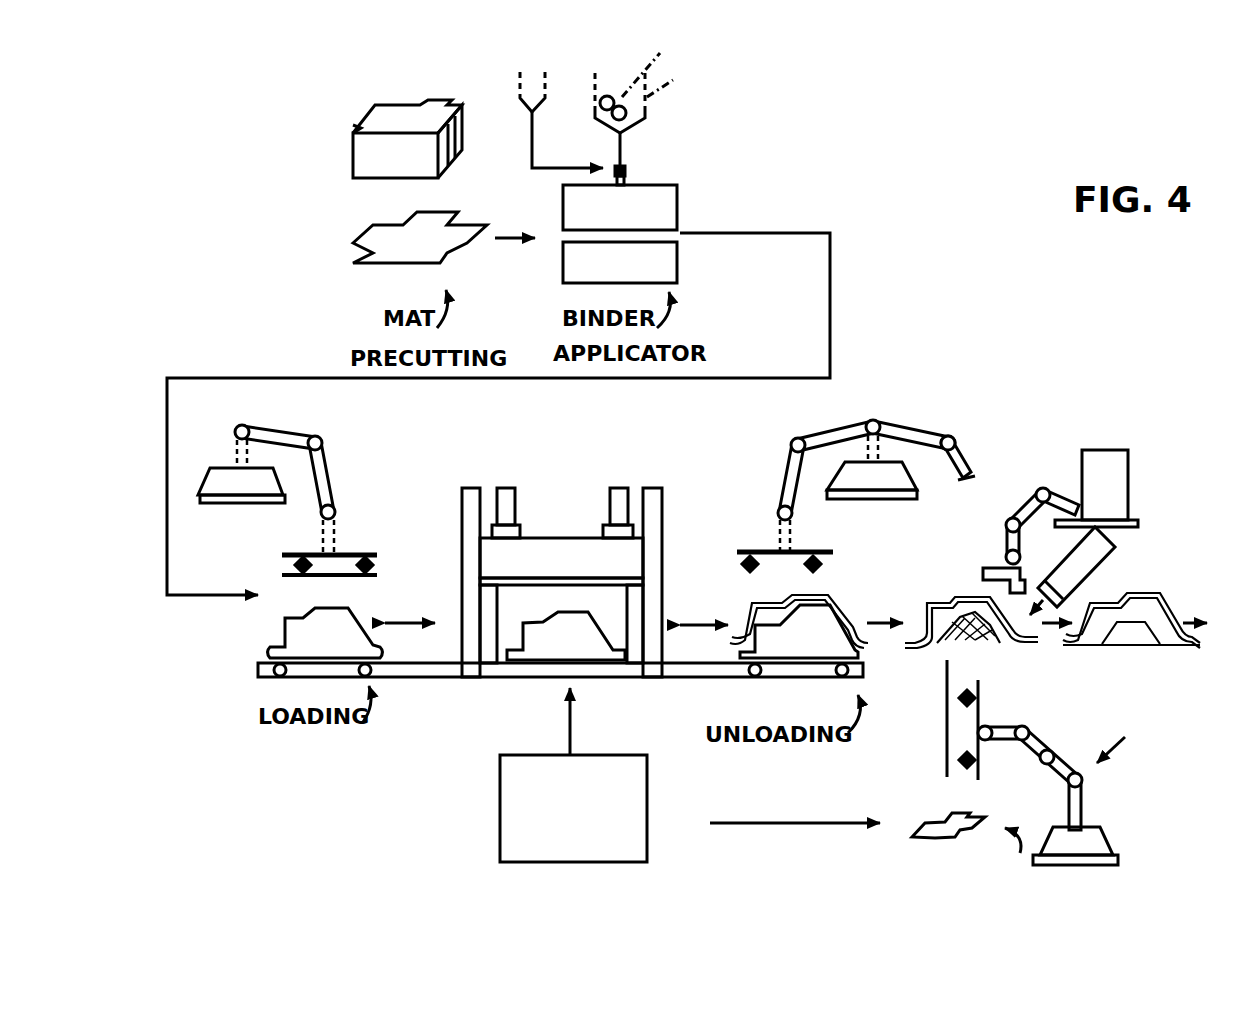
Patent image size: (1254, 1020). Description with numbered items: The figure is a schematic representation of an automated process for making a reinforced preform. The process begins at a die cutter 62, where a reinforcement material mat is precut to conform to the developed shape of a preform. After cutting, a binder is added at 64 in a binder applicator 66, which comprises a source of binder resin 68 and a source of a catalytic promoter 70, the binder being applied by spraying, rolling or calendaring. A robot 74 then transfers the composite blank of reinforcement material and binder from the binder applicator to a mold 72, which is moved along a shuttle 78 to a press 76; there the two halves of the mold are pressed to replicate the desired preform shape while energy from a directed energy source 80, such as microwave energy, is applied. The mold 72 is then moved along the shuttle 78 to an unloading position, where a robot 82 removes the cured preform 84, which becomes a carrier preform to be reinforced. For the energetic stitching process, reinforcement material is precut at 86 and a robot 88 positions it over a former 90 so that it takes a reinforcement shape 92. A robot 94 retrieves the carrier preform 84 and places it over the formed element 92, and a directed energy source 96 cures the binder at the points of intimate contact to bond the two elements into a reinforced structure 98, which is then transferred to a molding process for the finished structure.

The die cutter 62 is at (403, 147).
The binder addition step 64 is at (549, 304).
The binder applicator 66 is at (640, 178).
The source of binder resin 68 is at (641, 93).
The source of catalytic promoter 70 is at (522, 90).
The mold 72 is at (287, 630).
The robot 74 is at (346, 522).
The press 76 is at (667, 489).
The shuttle 78 is at (431, 681).
The directed energy source 80 is at (508, 795).
The robot 82 is at (782, 483).
The cured preform 84 is at (832, 597).
The reinforcement precutting step 86 is at (940, 875).
The robot 88 is at (1048, 735).
The former 90 is at (960, 640).
The reinforcement shape 92 is at (1008, 642).
The robot 94 is at (972, 480).
The directed energy source 96 is at (1105, 555).
The reinforced structure 98 is at (1164, 598).